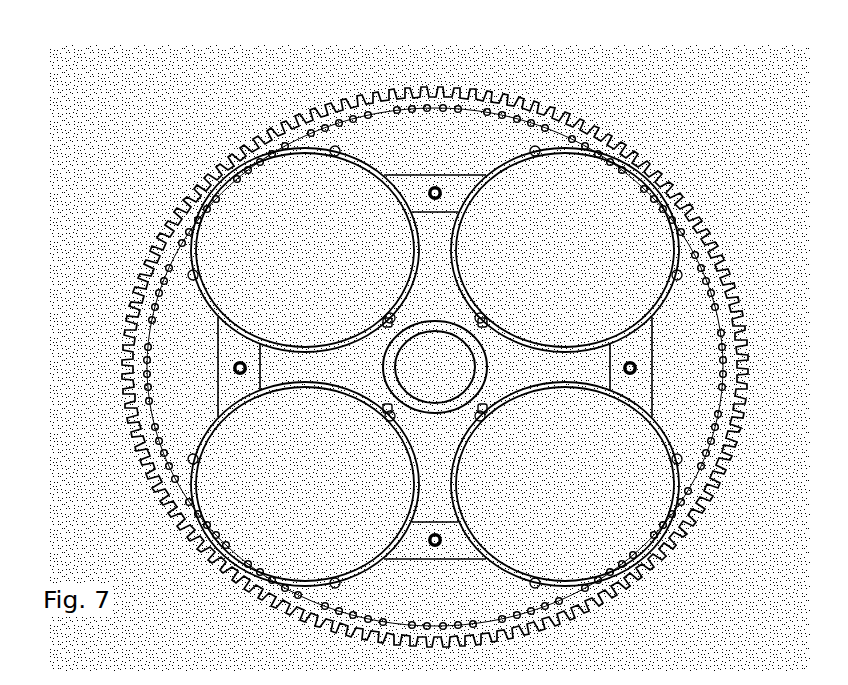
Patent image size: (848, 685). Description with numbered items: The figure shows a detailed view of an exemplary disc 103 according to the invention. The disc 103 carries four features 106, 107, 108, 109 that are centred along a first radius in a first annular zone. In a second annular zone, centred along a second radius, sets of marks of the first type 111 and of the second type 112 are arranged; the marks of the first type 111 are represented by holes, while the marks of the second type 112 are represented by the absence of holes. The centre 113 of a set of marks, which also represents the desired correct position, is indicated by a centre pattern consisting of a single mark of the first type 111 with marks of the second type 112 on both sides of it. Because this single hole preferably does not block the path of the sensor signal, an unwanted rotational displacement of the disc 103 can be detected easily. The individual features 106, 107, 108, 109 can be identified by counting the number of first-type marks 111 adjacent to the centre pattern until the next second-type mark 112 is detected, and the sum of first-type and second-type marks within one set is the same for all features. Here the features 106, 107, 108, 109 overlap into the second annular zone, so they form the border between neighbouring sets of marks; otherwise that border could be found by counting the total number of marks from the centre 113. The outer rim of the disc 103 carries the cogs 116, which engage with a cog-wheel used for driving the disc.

The disc 103 is at (736, 147).
The feature 106 is at (566, 249).
The feature 107 is at (566, 485).
The feature 108 is at (303, 485).
The feature 109 is at (303, 249).
The marks of the first type 111 is at (324, 118).
The marks of the second type 112 is at (422, 107).
The centre of a set of marks 113 is at (430, 108).
The cogs 116 is at (690, 197).